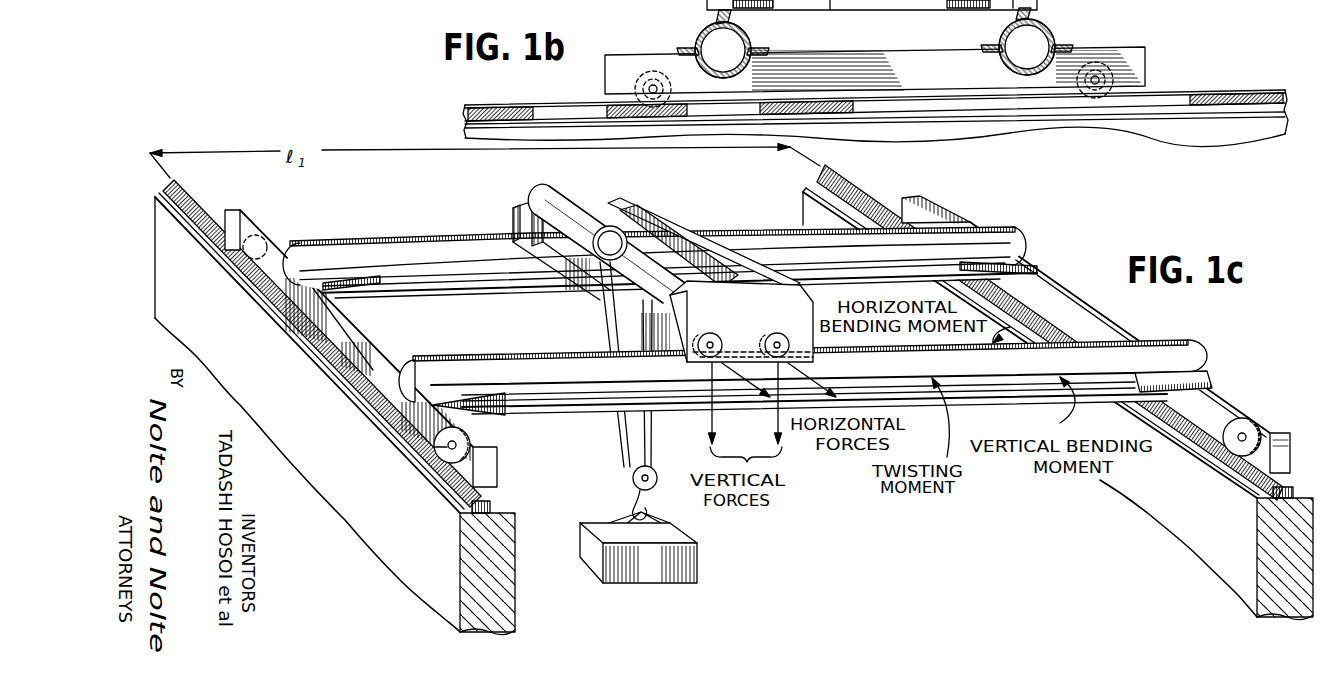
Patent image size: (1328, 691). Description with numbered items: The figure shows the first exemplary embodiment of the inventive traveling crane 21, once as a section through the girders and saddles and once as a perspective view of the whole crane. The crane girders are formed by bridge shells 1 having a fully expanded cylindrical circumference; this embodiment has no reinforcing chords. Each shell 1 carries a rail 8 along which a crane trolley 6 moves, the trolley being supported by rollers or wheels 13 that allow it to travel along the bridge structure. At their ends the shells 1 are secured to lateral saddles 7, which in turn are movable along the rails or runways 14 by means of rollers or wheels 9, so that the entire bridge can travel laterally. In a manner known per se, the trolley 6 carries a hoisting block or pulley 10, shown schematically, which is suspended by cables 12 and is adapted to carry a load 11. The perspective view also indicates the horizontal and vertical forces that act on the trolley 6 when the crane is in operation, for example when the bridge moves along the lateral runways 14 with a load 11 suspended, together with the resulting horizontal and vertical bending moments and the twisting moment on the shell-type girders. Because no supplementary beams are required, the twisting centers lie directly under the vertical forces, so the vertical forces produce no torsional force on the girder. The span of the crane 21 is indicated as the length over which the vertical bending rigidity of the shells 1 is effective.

In FIG. 1b, the bridge shell 1 is at (690, 24).
In FIG. 1c, the bridge shell 1 is at (488, 258).
In FIG. 1c, the crane trolley 6 is at (655, 205).
In FIG. 1b, the lateral saddle 7 is at (1134, 62).
In FIG. 1c, the lateral saddle 7 is at (489, 472).
In FIG. 1b, the rail 8 is at (735, 17).
In FIG. 1c, the rail 8 is at (727, 230).
In FIG. 1b, the roller or wheel 9 is at (644, 72).
In FIG. 1c, the roller or wheel 9 is at (262, 240).
In FIG. 1c, the hoisting block or pulley 10 is at (612, 480).
In FIG. 1c, the load 11 is at (678, 568).
In FIG. 1c, the cable 12 is at (617, 443).
In FIG. 1c, the roller or wheel 13 is at (768, 334).
In FIG. 1b, the rail or runway 14 is at (558, 117).
In FIG. 1c, the rail or runway 14 is at (198, 205).
In FIG. 1b, the traveling crane 21 is at (1136, 30).
In FIG. 1c, the traveling crane 21 is at (410, 215).